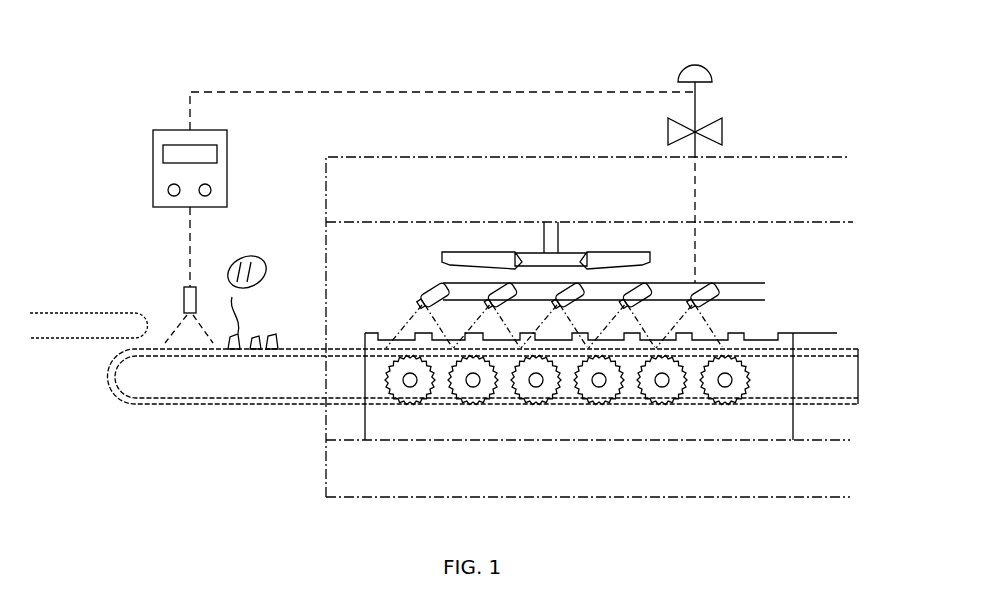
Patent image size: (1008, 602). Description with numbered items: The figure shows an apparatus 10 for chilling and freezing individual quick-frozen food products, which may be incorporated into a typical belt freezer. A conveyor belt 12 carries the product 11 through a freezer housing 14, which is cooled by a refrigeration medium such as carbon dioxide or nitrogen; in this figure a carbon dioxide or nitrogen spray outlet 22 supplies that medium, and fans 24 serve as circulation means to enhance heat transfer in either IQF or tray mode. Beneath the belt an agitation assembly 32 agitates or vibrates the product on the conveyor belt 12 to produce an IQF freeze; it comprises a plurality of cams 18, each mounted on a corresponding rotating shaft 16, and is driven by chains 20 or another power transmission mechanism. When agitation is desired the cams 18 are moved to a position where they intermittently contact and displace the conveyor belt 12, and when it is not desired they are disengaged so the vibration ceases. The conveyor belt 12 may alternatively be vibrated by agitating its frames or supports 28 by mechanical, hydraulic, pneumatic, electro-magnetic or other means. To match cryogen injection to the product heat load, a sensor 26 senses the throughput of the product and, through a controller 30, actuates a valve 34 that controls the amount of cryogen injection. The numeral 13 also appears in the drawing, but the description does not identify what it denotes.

The apparatus 10 is at (220, 459).
The product 11 is at (250, 299).
The conveyor belt 12 is at (335, 346).
The rollers 13 is at (452, 405).
The freezer housing 14 is at (388, 183).
The rotating shaft 16 is at (582, 404).
The cams 18 is at (389, 404).
The chains 20 is at (635, 406).
The spray outlet 22 is at (637, 290).
The fans 24 is at (527, 255).
The sensor 26 is at (183, 310).
The frames or supports 28 is at (365, 383).
The controller 30 is at (155, 129).
The agitation assembly 32 is at (858, 382).
The valve 34 is at (693, 62).